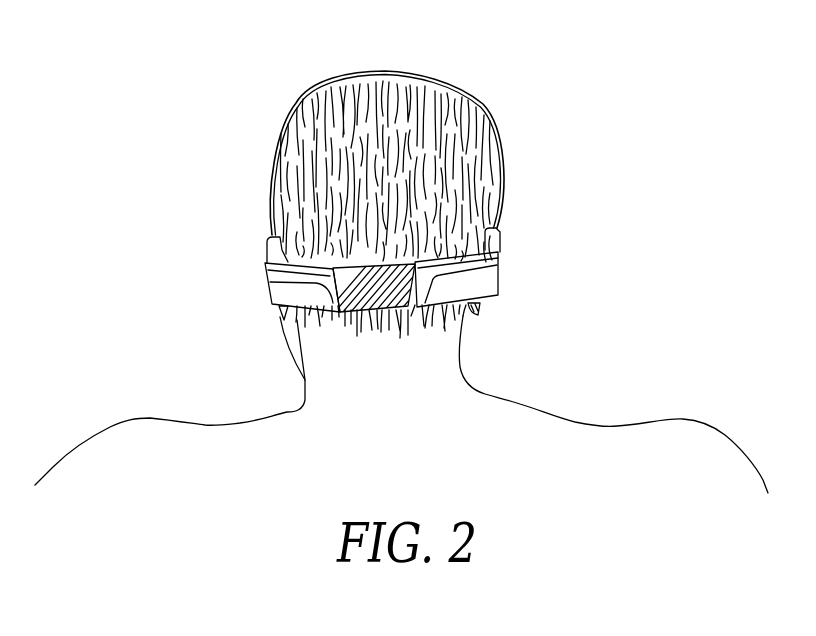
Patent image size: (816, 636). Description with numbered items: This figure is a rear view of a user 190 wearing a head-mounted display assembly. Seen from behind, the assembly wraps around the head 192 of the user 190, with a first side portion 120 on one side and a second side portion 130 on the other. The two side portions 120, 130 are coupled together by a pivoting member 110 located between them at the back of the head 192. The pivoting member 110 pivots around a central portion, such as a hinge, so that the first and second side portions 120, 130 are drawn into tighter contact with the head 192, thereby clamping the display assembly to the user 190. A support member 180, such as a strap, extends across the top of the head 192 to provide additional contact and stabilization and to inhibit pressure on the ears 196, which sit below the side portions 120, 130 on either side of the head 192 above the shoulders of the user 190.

The pivoting member 110 is at (375, 297).
The first side portion 120 is at (278, 287).
The second side portion 130 is at (500, 238).
The support member 180 is at (395, 71).
The user 190 is at (616, 426).
The head 192 is at (325, 118).
The ear 196 is at (281, 318).